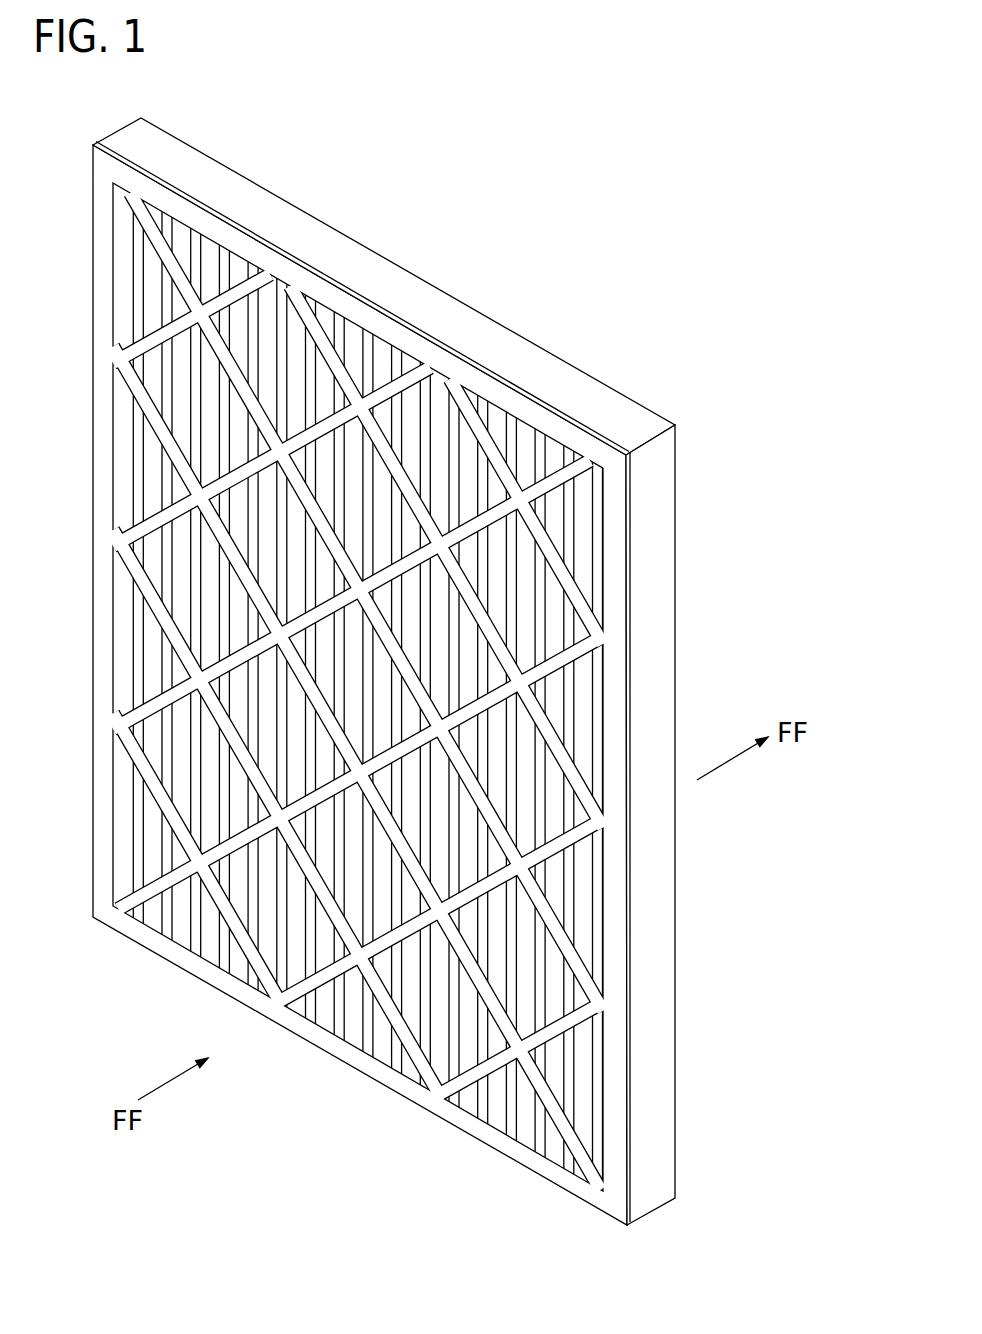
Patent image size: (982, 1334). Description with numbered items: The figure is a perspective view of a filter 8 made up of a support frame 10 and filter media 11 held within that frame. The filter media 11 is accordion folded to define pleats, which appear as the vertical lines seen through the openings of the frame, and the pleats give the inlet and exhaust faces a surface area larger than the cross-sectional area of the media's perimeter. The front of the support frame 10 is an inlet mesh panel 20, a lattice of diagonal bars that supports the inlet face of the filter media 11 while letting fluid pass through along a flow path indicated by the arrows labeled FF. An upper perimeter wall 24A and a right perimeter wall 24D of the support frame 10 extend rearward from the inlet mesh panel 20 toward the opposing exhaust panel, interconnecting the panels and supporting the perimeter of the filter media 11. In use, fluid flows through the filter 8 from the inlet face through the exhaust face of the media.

The filter 8 is at (395, 663).
The support frame 10 is at (430, 671).
The filter media 11 is at (177, 565).
The inlet mesh panel 20 is at (92, 773).
The upper perimeter wall 24A is at (473, 325).
The right perimeter wall 24D is at (648, 953).